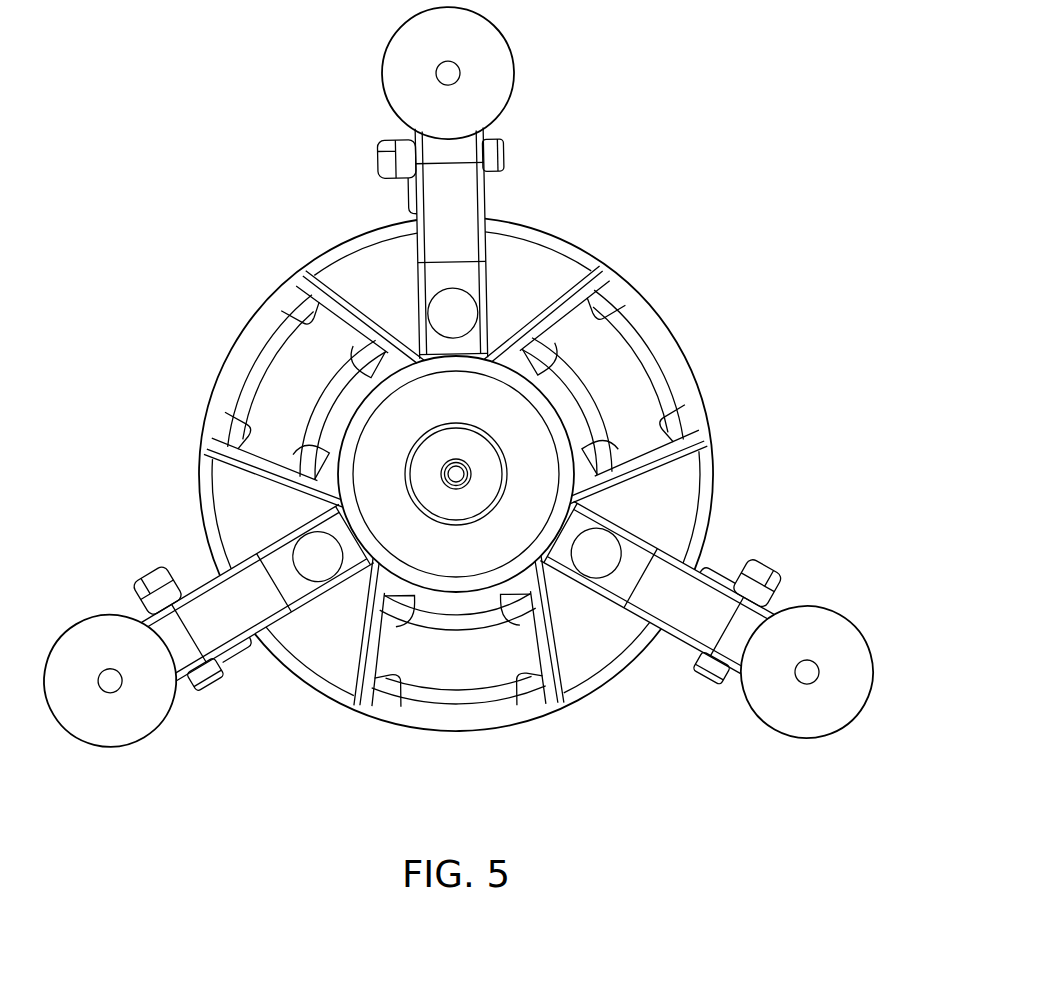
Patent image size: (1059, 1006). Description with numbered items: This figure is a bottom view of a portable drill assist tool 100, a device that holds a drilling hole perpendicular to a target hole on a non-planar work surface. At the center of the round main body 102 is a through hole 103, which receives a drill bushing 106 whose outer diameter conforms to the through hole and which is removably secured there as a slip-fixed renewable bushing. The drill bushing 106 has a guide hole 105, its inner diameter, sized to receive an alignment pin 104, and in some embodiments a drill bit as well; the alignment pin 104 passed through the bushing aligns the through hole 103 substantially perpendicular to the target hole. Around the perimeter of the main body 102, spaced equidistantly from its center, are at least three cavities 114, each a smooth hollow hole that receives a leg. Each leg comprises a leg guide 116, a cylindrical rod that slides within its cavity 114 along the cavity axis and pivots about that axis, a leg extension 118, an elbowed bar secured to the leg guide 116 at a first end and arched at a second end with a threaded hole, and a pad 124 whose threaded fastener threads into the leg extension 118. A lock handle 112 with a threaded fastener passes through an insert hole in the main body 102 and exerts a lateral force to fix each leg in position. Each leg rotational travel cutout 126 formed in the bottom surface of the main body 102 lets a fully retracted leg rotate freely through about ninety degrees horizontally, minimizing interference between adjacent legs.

The portable drill assist tool 100 is at (656, 132).
The main body 102 is at (456, 723).
The through hole 103 is at (434, 427).
The alignment pin 104 is at (444, 472).
The guide hole 105 is at (456, 459).
The drill bushing 106 is at (482, 494).
The lock handle 112 is at (388, 156).
The cavity 114 is at (304, 584).
The leg guide 116 is at (307, 550).
The leg extension 118 is at (712, 595).
The pad 124 is at (140, 727).
The leg rotational travel cutout 126 is at (537, 254).